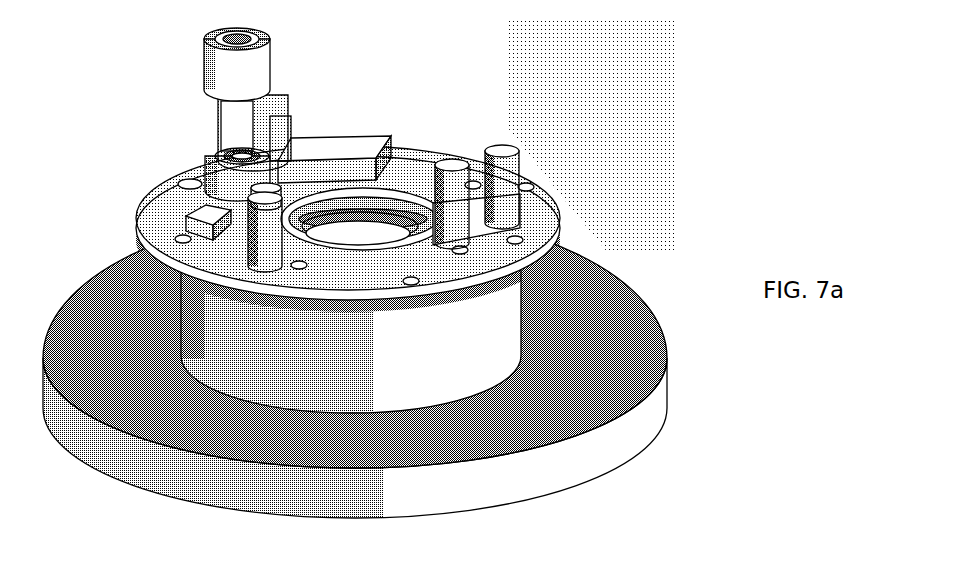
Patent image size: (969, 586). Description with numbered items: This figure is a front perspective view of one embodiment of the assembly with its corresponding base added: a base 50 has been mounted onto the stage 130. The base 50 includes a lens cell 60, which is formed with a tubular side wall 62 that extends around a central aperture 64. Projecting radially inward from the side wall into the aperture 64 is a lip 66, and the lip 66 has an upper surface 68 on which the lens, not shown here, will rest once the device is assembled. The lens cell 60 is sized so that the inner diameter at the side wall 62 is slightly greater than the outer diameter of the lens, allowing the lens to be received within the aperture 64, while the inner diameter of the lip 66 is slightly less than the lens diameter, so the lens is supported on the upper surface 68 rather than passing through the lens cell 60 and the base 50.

The base 50 is at (532, 203).
The lens cell 60 is at (365, 188).
The tubular side wall 62 is at (308, 197).
The central aperture 64 is at (343, 228).
The lip 66 is at (365, 213).
The upper surface 68 is at (318, 205).
The stage 130 is at (167, 442).